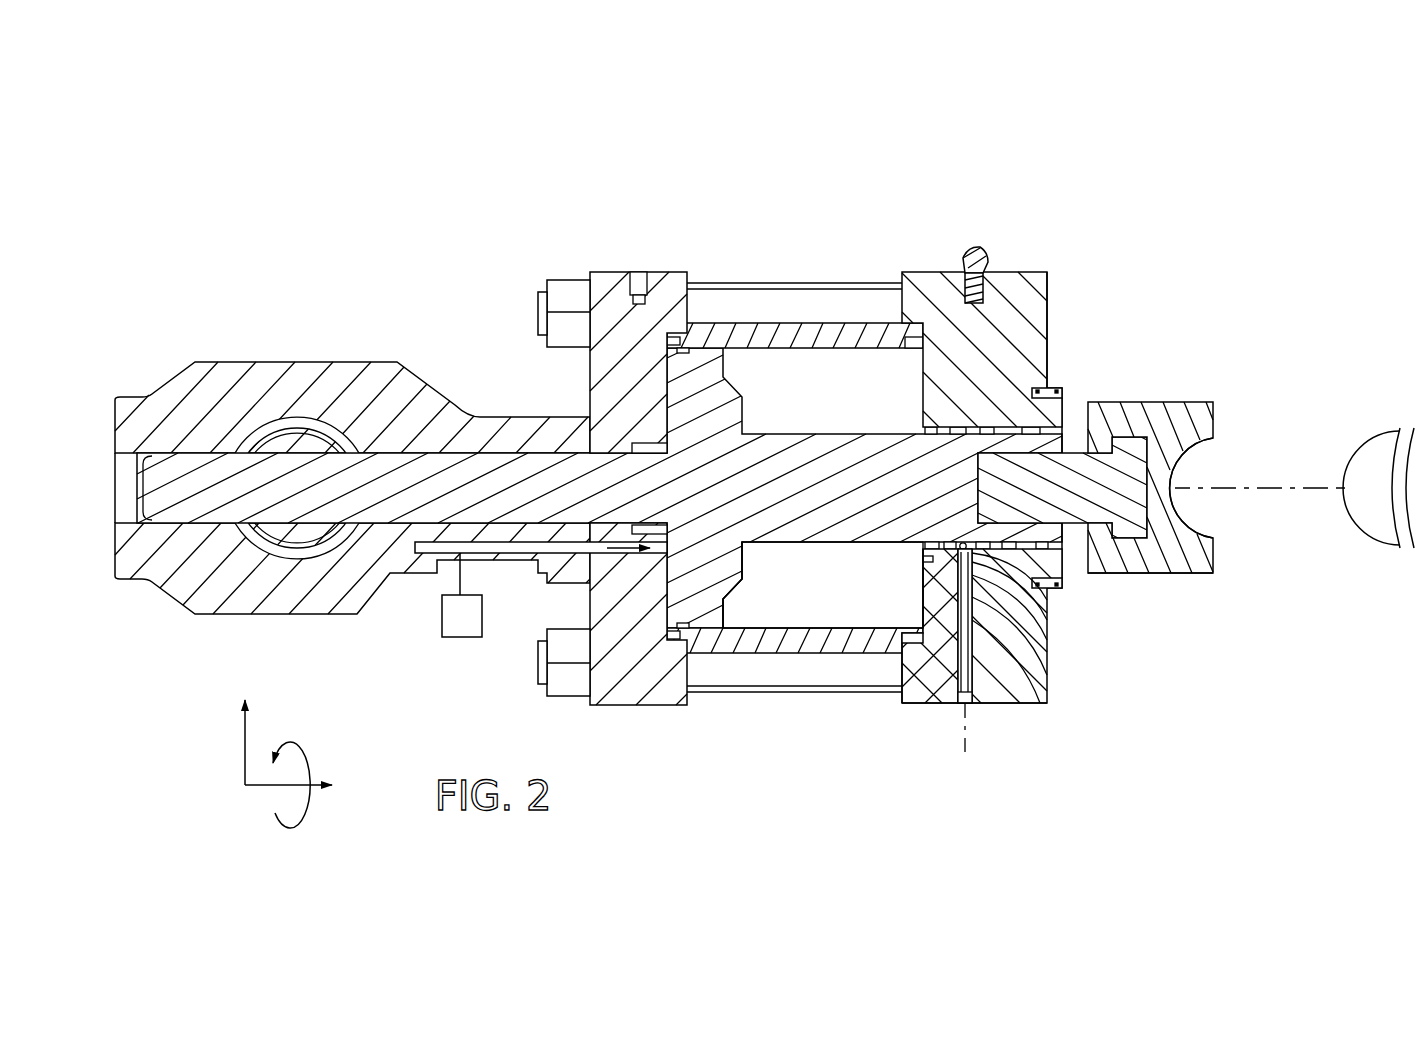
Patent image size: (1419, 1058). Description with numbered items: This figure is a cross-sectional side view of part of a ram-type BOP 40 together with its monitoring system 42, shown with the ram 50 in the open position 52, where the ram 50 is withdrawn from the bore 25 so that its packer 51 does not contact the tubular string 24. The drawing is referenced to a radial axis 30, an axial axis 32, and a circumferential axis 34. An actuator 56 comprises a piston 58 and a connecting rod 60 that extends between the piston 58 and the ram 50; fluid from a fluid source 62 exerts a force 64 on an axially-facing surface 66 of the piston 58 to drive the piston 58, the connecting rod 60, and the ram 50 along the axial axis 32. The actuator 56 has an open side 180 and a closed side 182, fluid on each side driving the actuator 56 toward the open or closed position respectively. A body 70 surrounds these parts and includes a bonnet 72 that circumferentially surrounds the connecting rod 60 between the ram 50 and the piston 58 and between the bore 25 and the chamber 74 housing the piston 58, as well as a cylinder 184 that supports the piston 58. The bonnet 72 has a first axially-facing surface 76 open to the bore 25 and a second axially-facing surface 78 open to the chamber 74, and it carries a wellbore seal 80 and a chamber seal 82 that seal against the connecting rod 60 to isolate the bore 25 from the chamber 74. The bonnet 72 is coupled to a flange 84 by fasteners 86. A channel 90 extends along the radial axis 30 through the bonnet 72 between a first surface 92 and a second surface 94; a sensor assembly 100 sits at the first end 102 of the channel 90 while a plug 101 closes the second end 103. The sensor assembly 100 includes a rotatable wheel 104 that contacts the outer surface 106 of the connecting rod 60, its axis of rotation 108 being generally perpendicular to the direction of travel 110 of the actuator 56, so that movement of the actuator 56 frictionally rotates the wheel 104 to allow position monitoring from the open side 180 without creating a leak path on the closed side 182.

The tubular string 24 is at (1357, 520).
The bore 25 is at (1190, 610).
The radial axis 30 is at (243, 740).
The axial axis 32 is at (258, 790).
The circumferential axis 34 is at (300, 750).
The BOP 40 is at (1008, 170).
The monitoring system 42 is at (897, 786).
The ram 50 is at (1181, 389).
The packer 51 is at (1186, 437).
The open position 52 is at (1127, 582).
The actuator 56 is at (770, 588).
The piston 58 is at (700, 362).
The connecting rod 60 is at (906, 457).
The fluid source 62 is at (442, 617).
The force 64 is at (627, 553).
The axially-facing surface 66 is at (662, 557).
The body 70 is at (1018, 243).
The bonnet 72 is at (922, 270).
The chamber 74 is at (800, 600).
The first axially-facing surface 76 is at (1065, 560).
The second axially-facing surface 78 is at (925, 577).
The wellbore seal 80 is at (1048, 640).
The chamber seal 82 is at (923, 590).
The flange 84 is at (670, 288).
The fastener 86 is at (785, 307).
The channel 90 is at (902, 697).
The first surface 92 is at (1018, 705).
The second surface 94 is at (1048, 665).
The sensor assembly 100 is at (950, 562).
The plug 101 is at (960, 700).
The first end 102 is at (946, 528).
The second end 103 is at (978, 720).
The rotatable wheel 104 is at (963, 543).
The outer surface 106 is at (968, 428).
The axis of rotation 108 is at (1048, 690).
The direction of travel 110 is at (866, 479).
The open side 180 is at (1140, 310).
The closed side 182 is at (532, 372).
The cylinder 184 is at (322, 360).